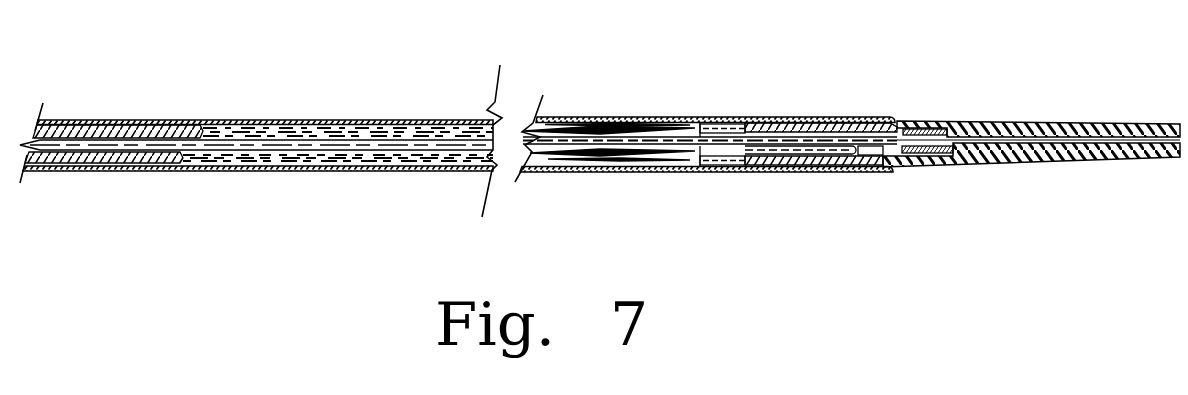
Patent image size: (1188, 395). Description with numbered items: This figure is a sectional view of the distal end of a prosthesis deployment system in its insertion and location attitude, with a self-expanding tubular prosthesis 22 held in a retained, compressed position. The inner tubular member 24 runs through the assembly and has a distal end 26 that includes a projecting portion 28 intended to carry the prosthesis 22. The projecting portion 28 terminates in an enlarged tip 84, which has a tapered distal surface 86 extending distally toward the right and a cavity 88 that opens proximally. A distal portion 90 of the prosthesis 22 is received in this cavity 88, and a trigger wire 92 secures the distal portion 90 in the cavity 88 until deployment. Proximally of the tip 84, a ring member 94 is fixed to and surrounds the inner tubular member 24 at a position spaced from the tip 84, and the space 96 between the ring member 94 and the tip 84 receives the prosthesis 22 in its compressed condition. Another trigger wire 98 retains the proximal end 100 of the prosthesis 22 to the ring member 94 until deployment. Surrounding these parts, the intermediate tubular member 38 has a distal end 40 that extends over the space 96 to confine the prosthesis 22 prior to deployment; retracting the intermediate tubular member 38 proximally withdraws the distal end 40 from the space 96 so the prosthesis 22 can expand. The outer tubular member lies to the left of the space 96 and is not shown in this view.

The tubular prosthesis 22 is at (358, 154).
The inner tubular member 24 is at (307, 140).
The distal end of inner tubular member 26 is at (1137, 158).
The projecting portion 28 is at (952, 98).
The intermediate tubular member 38 is at (586, 169).
The distal end of intermediate tubular member 40 is at (713, 122).
The enlarged tip 84 is at (927, 163).
The tapered distal surface 86 is at (1137, 126).
The cavity of tip 88 is at (862, 122).
The distal portion of prosthesis 90 is at (802, 167).
The trigger wire 92 is at (855, 156).
The ring member 94 is at (106, 172).
The space 96 is at (420, 128).
The trigger wire 98 is at (200, 172).
The proximal end of prosthesis 100 is at (223, 121).